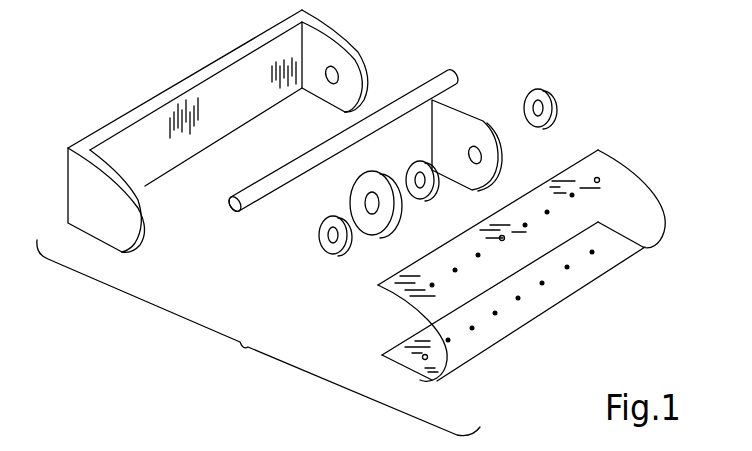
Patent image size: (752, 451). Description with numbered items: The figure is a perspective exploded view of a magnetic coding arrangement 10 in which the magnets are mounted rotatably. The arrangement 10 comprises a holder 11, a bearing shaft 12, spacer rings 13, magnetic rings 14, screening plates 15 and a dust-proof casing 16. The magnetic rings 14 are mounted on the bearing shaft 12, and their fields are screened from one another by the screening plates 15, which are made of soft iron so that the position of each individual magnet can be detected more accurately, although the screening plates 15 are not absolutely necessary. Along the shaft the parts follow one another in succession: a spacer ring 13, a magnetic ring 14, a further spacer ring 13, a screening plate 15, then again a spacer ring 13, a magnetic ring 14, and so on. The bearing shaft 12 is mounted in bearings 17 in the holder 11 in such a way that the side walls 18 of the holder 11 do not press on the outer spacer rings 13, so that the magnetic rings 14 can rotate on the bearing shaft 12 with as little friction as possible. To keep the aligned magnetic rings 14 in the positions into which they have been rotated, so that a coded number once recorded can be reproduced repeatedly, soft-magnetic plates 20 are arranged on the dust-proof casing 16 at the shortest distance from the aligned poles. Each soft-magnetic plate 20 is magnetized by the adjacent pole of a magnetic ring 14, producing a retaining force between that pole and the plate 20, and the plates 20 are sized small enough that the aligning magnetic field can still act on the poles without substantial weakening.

The magnetic coding arrangement 10 is at (487, 61).
The holder 11 is at (226, 144).
The bearing shaft 12 is at (240, 213).
The spacer ring 13 is at (326, 243).
The magnetic ring 14 is at (356, 203).
The screening plate 15 is at (498, 176).
The dust-proof casing 16 is at (521, 272).
The bearing 17 is at (329, 78).
The side wall 18 is at (98, 229).
The soft-magnetic plate 20 is at (598, 181).